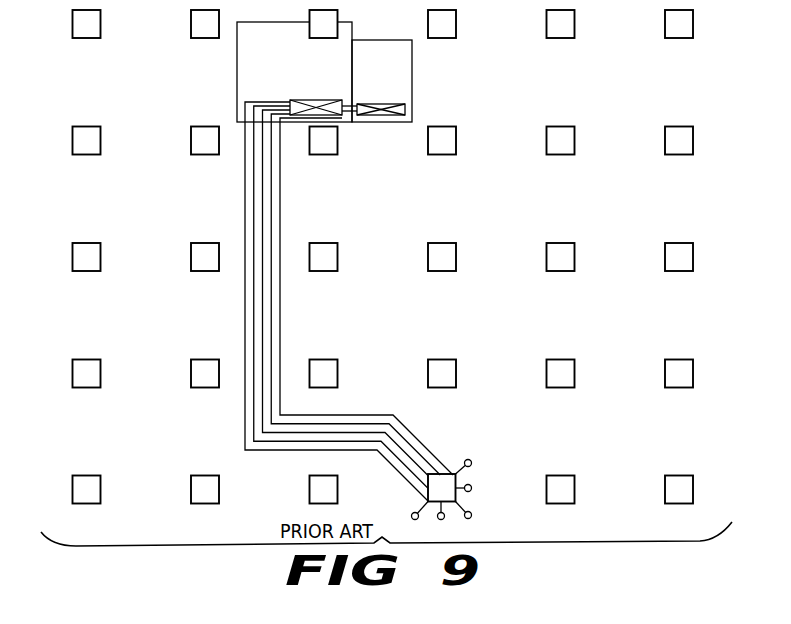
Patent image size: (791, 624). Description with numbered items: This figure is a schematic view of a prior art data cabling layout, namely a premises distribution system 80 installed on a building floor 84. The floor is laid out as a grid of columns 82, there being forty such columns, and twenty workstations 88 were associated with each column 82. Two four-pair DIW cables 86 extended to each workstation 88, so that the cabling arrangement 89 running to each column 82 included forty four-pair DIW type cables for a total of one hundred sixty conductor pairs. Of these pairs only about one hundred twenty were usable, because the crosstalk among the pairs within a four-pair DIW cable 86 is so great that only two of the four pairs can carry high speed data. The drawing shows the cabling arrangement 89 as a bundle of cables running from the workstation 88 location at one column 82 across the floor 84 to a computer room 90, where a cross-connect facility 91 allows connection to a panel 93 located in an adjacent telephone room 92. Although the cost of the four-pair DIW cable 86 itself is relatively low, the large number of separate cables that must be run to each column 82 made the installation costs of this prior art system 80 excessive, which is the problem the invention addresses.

The premises distribution system 80 is at (73, 80).
The column 82 is at (437, 248).
The building floor 84 is at (386, 196).
The four-pair DIW cable 86 is at (461, 467).
The workstation 88 is at (471, 460).
The cabling arrangement 89 is at (348, 413).
The computer room 90 is at (237, 48).
The cross-connect facility 91 is at (308, 115).
The telephone room 92 is at (412, 62).
The panel 93 is at (375, 115).